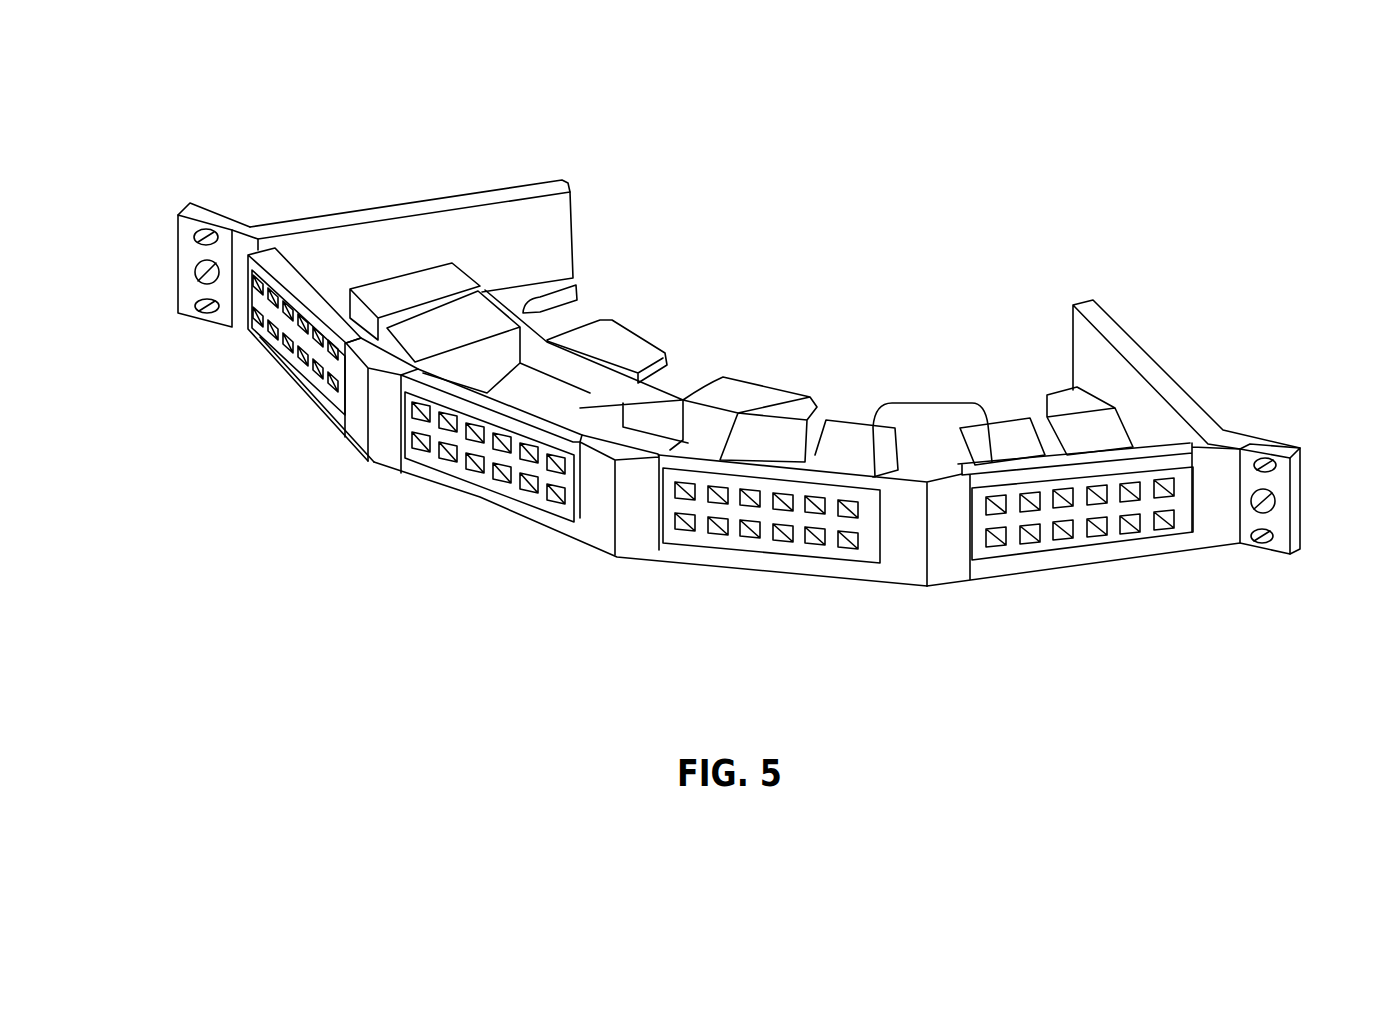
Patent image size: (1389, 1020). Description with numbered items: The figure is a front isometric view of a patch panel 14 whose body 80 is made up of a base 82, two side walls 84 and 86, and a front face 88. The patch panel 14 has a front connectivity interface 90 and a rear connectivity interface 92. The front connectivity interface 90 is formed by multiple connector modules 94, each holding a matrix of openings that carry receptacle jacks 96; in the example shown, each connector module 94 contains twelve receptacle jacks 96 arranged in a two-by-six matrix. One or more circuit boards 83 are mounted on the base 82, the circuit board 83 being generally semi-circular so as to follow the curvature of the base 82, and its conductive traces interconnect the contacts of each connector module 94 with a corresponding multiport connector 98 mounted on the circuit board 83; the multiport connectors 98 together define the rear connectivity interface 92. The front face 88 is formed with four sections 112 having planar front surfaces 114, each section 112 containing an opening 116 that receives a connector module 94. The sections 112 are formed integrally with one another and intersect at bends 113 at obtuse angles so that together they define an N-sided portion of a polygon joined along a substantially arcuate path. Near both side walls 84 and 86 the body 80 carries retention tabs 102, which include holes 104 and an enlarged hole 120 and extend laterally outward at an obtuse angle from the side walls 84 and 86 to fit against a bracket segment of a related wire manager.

The patch panel 14 is at (187, 153).
The body 80 is at (245, 226).
The base 82 is at (735, 395).
The circuit board 83 is at (543, 350).
The side wall 84 is at (448, 218).
The side wall 86 is at (1125, 375).
The front face 88 is at (922, 480).
The front connectivity interface 90 is at (275, 355).
The rear connectivity interface 92 is at (608, 343).
The connector module 94 is at (260, 335).
The receptacle jack 96 is at (333, 392).
The multiport connector 98 is at (1070, 427).
The retention tab 102 is at (183, 245).
The hole 104 is at (1290, 537).
The section 112 is at (928, 607).
The bend 113 is at (365, 438).
The planar front surface 114 is at (650, 552).
The opening 116 is at (653, 512).
The enlarged hole 120 is at (200, 277).